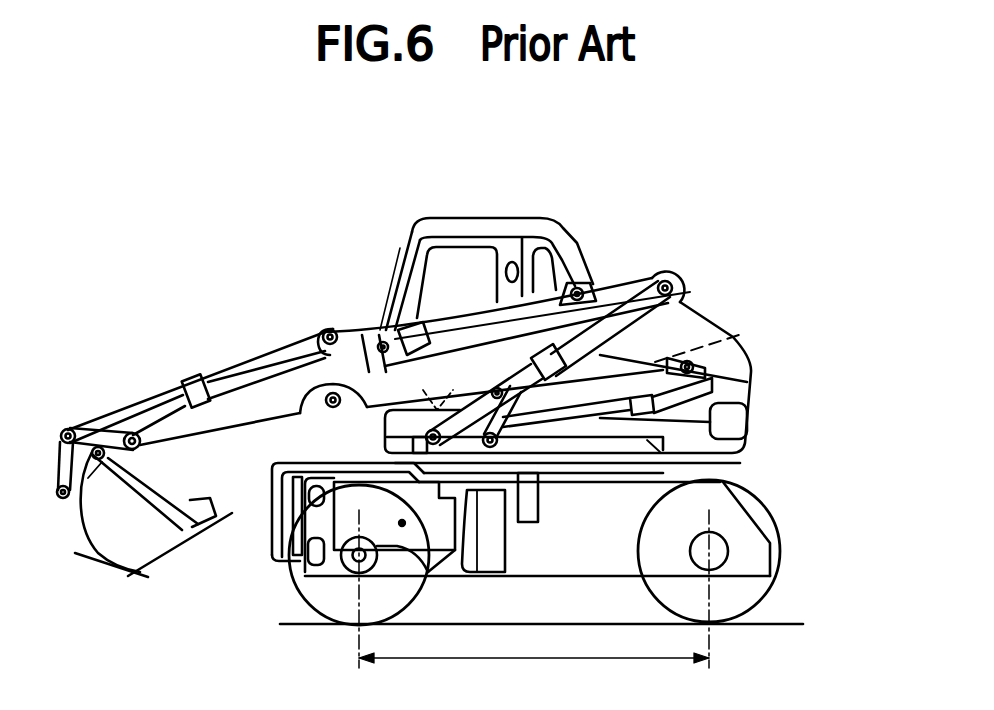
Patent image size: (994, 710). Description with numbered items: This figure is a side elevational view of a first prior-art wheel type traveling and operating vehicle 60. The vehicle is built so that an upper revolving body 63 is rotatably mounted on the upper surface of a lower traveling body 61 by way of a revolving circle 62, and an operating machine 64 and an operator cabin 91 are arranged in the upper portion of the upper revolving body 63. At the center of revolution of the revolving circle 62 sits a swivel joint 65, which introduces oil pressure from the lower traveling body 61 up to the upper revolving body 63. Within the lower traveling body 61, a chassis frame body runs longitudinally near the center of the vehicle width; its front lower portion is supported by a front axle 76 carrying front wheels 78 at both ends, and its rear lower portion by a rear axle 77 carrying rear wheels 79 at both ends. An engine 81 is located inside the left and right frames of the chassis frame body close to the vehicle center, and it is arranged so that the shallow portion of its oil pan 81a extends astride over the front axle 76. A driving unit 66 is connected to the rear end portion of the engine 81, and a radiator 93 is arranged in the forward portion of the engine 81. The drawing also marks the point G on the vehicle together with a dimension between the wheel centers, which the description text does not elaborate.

The wheel type traveling and operating vehicle 60 is at (655, 250).
The operator cabin 91 is at (493, 222).
The operating machine 64 is at (352, 326).
The upper revolving body 63 is at (753, 442).
The revolving circle 62 is at (727, 455).
The swivel joint 65 is at (540, 498).
The driving unit 66 is at (508, 552).
The radiator 93 is at (287, 502).
The front axle 76 is at (340, 568).
The front wheel 78 is at (300, 604).
The engine 81 is at (443, 520).
The oil pan 81a is at (437, 548).
The lower traveling body 61 is at (628, 580).
The rear axle 77 is at (728, 550).
The rear wheel 79 is at (770, 596).
The center of gravity G is at (402, 523).